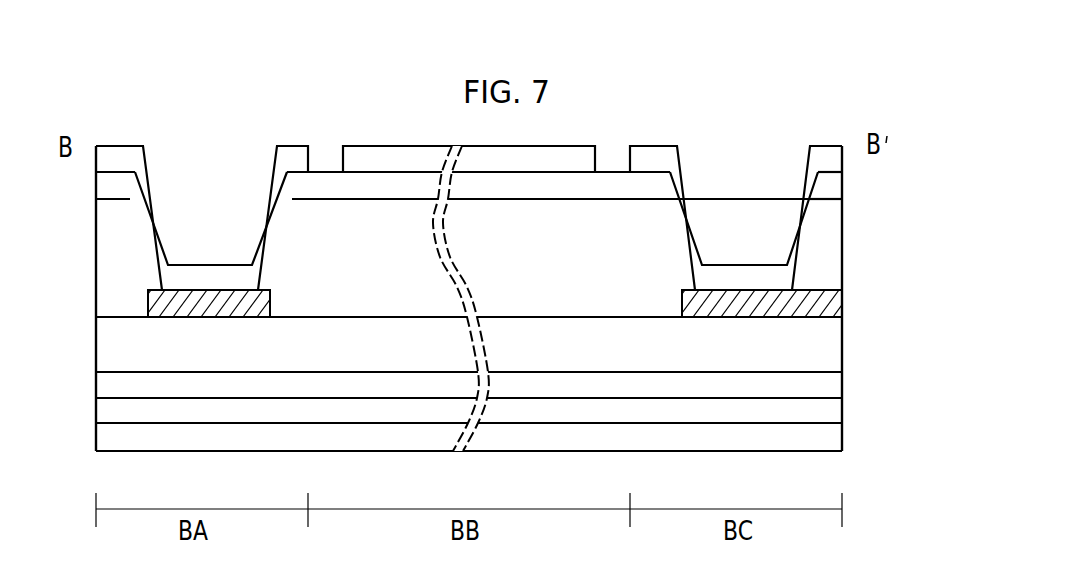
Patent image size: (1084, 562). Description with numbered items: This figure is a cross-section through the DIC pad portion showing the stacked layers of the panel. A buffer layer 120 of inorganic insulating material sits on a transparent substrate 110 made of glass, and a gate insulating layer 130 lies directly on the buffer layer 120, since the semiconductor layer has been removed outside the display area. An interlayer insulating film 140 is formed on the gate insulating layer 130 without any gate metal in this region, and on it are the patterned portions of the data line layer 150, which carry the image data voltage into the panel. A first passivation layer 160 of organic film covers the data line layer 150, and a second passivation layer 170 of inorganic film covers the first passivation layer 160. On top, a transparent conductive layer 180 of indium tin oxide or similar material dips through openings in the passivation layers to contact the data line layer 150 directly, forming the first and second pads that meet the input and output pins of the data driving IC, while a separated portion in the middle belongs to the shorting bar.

The transparent substrate 110 is at (830, 438).
The buffer layer 120 is at (830, 408).
The gate insulating layer 130 is at (830, 380).
The interlayer insulating film 140 is at (830, 340).
The data line layer 150 is at (830, 300).
The first passivation layer 160 is at (830, 243).
The second passivation layer 170 is at (830, 184).
The transparent conductive layer 180 is at (832, 158).